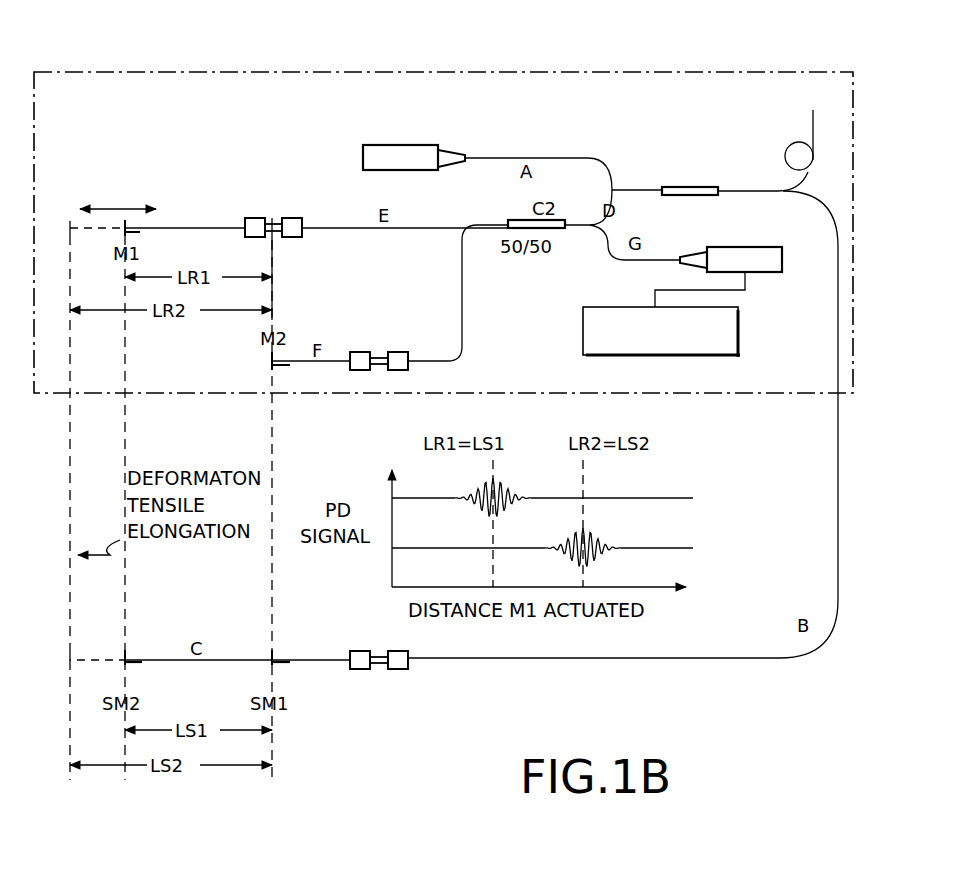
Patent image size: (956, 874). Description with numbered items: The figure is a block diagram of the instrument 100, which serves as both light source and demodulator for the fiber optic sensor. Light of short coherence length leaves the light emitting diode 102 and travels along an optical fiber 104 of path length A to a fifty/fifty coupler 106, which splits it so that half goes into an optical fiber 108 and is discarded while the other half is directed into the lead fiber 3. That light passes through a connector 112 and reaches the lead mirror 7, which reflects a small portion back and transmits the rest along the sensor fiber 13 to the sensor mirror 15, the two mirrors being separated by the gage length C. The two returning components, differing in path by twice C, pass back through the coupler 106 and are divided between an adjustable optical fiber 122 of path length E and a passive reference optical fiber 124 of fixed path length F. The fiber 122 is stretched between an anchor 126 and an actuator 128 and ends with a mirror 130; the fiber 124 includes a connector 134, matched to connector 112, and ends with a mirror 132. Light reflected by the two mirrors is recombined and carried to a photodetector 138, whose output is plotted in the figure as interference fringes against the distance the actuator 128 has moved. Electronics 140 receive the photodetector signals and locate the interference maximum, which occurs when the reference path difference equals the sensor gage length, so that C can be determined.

The instrument 100 is at (655, 72).
The light emitting diode 102 is at (372, 145).
The optical fiber 104 is at (556, 157).
The 50/50 coupler 106 is at (680, 187).
The optical fiber 108 is at (812, 122).
The connector 112 is at (396, 670).
The optical fiber 122 is at (363, 229).
The optical fiber 124 is at (462, 285).
The anchor 126 is at (292, 218).
The actuator 128 is at (230, 196).
The mirror 130 is at (125, 268).
The mirror 132 is at (272, 363).
The connector 134 is at (400, 352).
The photodetector 138 is at (765, 273).
The electronics 140 is at (583, 333).
The sensor fiber 13 is at (185, 662).
The sensor mirror 15 is at (125, 658).
The lead mirror 7 is at (272, 658).
The lead fiber 3 is at (738, 659).